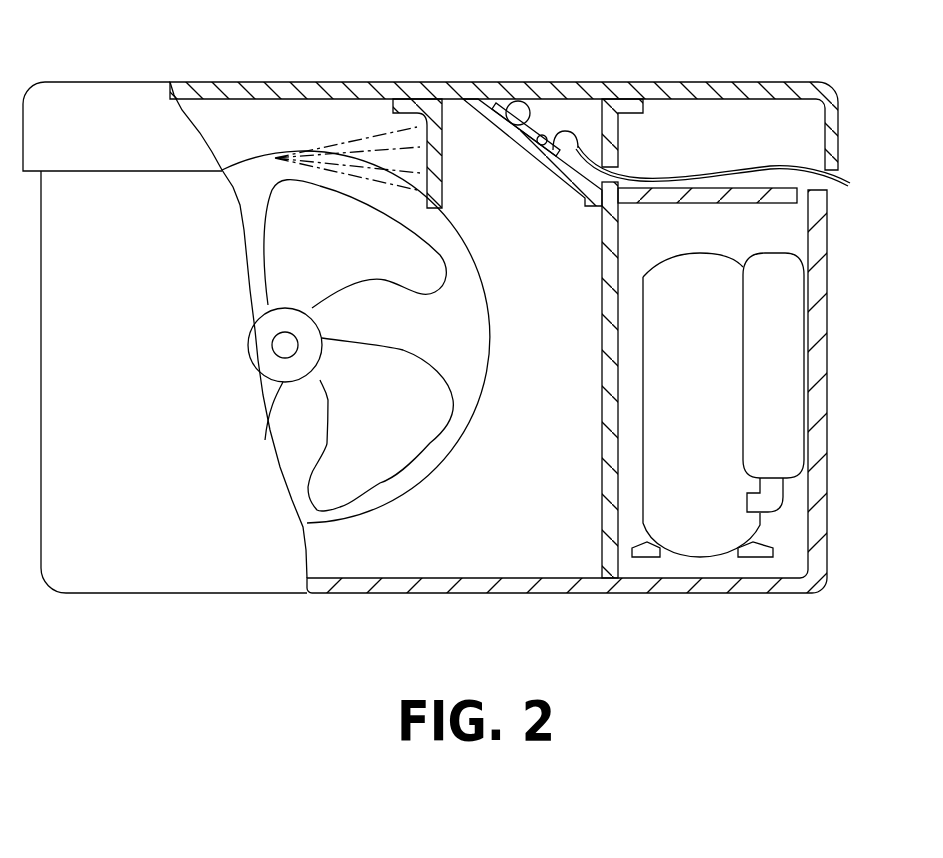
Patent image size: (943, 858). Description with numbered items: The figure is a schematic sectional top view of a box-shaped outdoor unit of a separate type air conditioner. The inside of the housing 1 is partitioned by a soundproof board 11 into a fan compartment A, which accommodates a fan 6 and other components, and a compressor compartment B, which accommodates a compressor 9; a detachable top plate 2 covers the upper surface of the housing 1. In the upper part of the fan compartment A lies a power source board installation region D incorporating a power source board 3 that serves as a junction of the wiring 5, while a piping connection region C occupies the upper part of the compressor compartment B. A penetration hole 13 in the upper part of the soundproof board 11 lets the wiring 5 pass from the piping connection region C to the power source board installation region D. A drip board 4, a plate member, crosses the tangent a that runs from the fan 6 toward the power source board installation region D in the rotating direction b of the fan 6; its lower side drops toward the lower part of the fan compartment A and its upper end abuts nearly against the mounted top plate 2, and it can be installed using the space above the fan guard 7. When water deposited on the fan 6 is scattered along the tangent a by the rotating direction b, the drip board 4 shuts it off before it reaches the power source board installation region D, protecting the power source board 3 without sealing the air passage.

The housing 1 is at (143, 563).
The top plate 2 is at (240, 90).
The power source board 3 is at (547, 128).
The drip board 4 is at (413, 127).
The wiring 5 is at (697, 163).
The fan 6 is at (310, 193).
The fan guard 7 is at (375, 543).
The compressor 9 is at (690, 527).
The soundproof board 11 is at (602, 433).
The penetration hole 13 is at (617, 165).
The tangent a is at (326, 135).
The fan compartment A is at (462, 137).
The compressor compartment B is at (767, 232).
The piping connection region C is at (767, 140).
The power source board installation region D is at (567, 123).
The rotating direction b is at (475, 262).